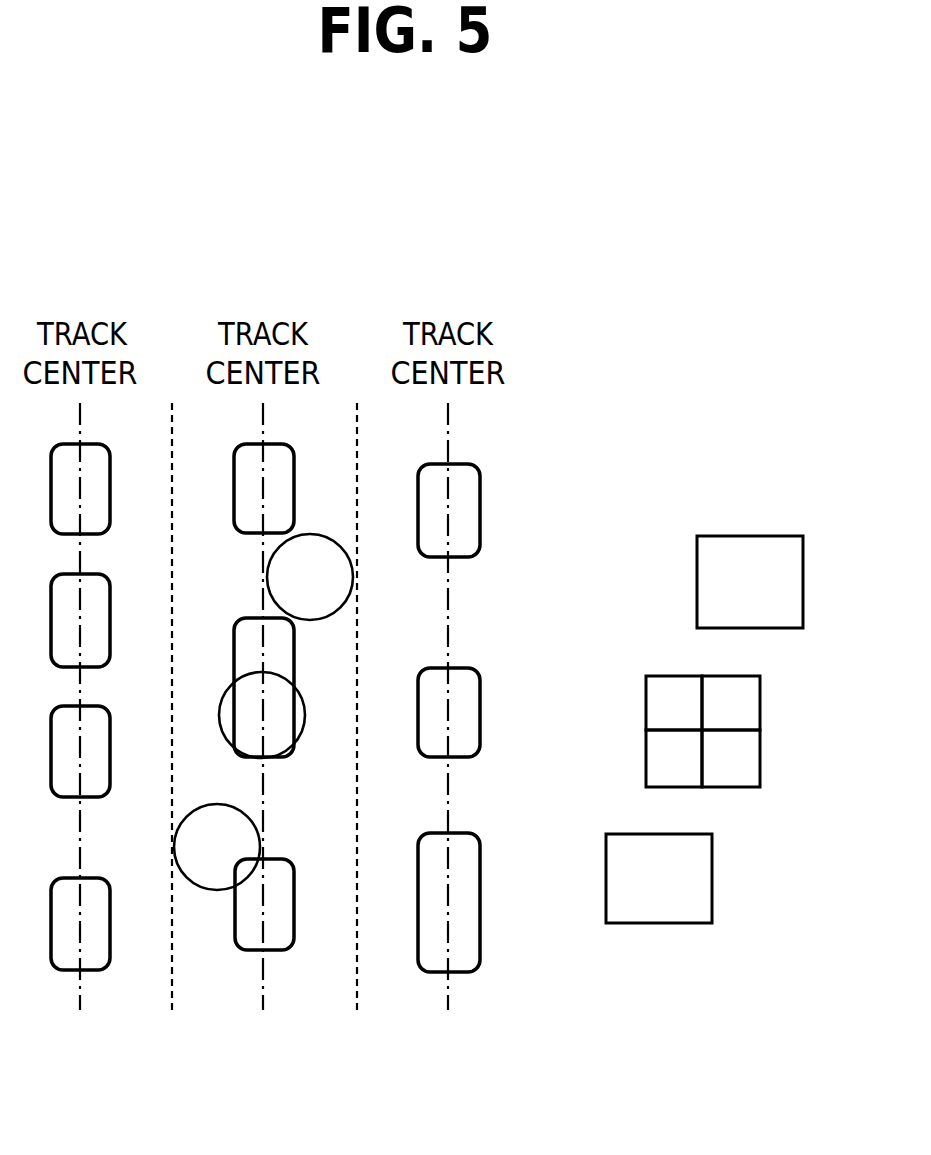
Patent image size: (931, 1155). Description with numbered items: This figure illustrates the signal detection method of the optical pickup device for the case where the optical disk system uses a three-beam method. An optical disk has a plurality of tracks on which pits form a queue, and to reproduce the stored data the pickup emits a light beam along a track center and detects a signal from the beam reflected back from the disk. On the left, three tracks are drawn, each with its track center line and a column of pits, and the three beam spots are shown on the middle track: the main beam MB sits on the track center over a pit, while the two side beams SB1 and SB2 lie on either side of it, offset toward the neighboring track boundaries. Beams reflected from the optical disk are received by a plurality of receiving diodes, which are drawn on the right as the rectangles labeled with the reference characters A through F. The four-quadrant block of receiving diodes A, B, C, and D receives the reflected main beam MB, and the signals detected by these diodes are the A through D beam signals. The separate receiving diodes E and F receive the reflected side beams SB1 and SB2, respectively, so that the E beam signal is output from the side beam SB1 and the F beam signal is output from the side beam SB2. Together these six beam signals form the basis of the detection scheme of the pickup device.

The side beam SB1 is at (311, 534).
The main beam MB is at (297, 737).
The side beam SB2 is at (210, 890).
The receiving diode A is at (674, 703).
The receiving diode B is at (731, 703).
The receiving diode C is at (731, 758).
The receiving diode D is at (674, 758).
The receiving diode E is at (750, 582).
The receiving diode F is at (659, 878).